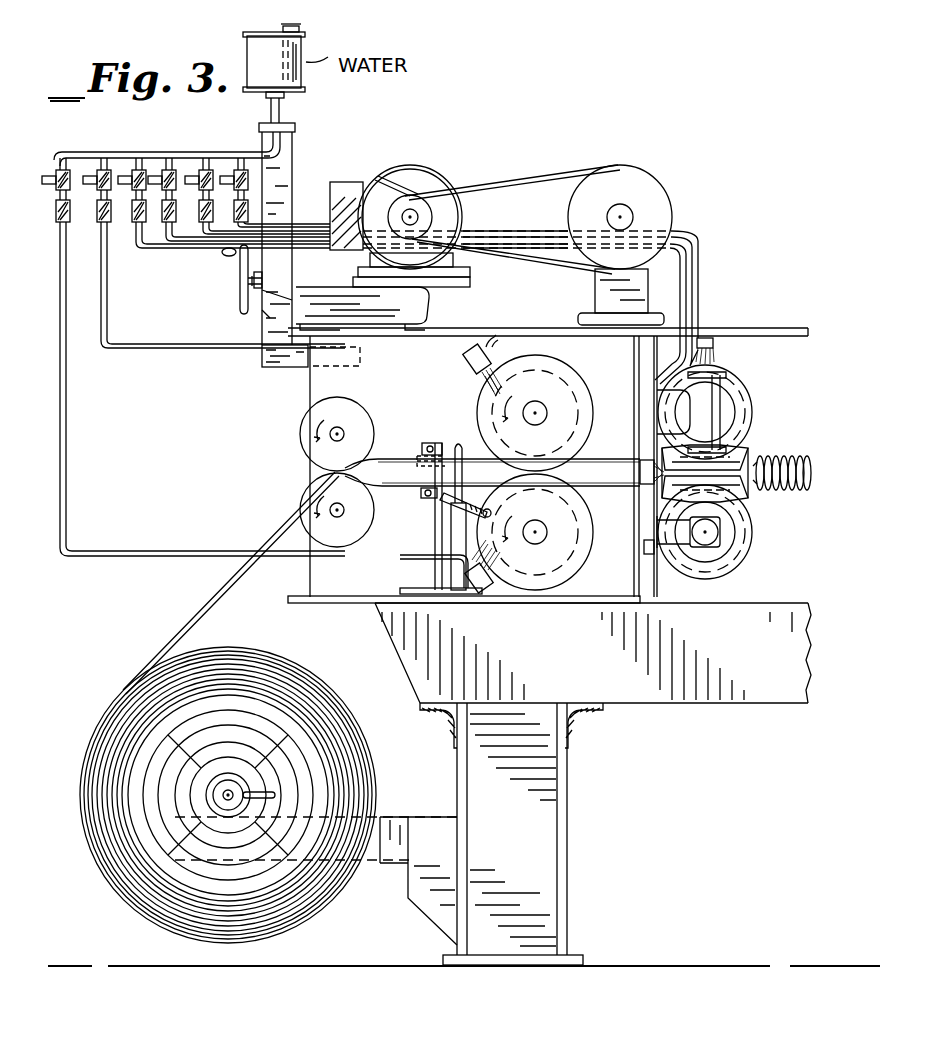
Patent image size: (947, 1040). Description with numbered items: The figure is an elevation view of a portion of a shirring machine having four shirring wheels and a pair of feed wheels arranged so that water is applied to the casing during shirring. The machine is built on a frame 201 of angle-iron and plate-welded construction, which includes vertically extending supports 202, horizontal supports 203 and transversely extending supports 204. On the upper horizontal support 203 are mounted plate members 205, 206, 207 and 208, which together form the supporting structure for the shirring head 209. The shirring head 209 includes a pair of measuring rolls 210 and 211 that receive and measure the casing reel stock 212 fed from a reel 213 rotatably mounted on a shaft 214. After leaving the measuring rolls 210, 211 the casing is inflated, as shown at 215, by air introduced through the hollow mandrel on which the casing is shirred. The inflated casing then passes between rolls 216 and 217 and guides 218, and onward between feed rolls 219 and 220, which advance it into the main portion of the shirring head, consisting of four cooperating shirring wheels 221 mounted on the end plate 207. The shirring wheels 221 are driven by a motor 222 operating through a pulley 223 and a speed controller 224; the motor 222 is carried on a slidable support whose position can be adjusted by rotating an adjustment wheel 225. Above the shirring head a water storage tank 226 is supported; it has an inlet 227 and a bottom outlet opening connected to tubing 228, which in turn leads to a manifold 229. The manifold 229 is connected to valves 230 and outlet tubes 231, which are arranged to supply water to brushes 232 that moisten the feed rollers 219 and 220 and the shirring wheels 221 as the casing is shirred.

The frame 201 is at (670, 810).
The vertically extending supports 202 is at (568, 894).
The horizontal supports 203 is at (732, 704).
The transversely extending supports 204 is at (448, 732).
The plate member 205 is at (320, 604).
The plate member 206 is at (314, 392).
The end plate 207 is at (640, 583).
The plate member 208 is at (572, 338).
The shirring head 209 is at (782, 545).
The measuring roll 210 is at (360, 534).
The measuring roll 211 is at (366, 428).
The casing reel stock 212 is at (188, 624).
The reel 213 is at (306, 912).
The shaft 214 is at (224, 790).
The inflated casing 215 is at (472, 458).
The roll 216 is at (424, 442).
The roll 217 is at (426, 498).
The guides 218 is at (462, 444).
The feed roll 219 is at (590, 430).
The feed roll 220 is at (566, 574).
The shirring wheels 221 is at (745, 400).
The motor 222 is at (405, 170).
The pulley 223 is at (530, 178).
The speed controller 224 is at (638, 172).
The adjustment wheel 225 is at (240, 304).
The water storage tank 226 is at (246, 52).
The inlet 227 is at (300, 27).
The tubing 228 is at (284, 111).
The manifold 229 is at (184, 150).
The valves 230 is at (264, 196).
The outlet tubes 231 is at (68, 398).
The brushes 232 is at (480, 380).